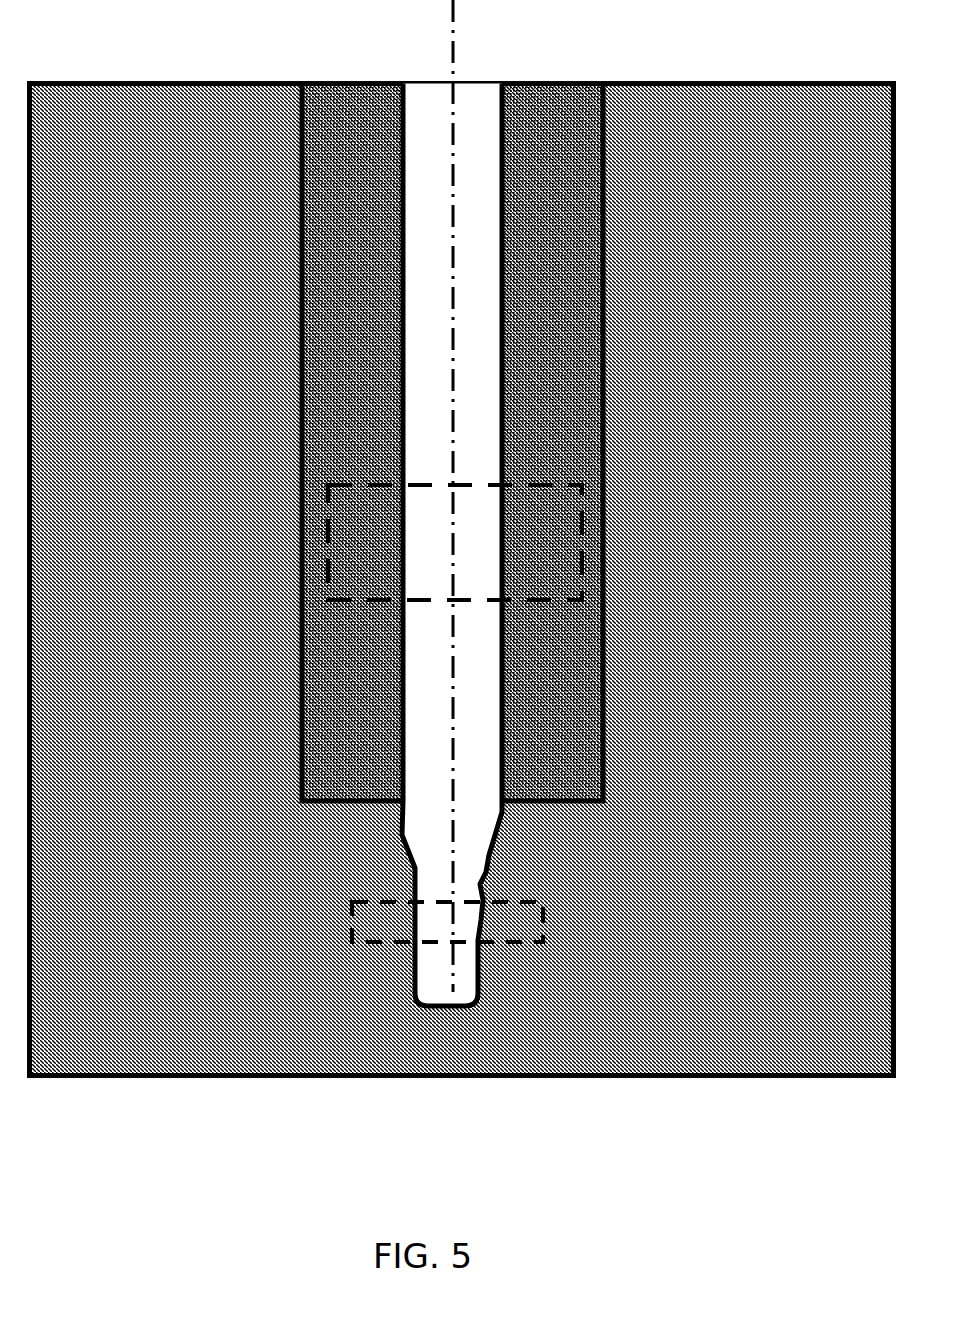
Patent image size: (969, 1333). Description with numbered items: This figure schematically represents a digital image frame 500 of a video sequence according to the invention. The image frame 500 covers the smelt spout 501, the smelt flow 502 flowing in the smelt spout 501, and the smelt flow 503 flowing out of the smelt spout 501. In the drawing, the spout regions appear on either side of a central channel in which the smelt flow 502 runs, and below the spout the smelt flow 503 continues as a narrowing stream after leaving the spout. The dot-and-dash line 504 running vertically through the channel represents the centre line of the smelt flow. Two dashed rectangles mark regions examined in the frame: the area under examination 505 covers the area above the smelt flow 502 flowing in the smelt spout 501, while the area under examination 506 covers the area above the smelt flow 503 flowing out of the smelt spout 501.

The digital image frame 500 is at (146, 1171).
The smelt spout 501 is at (320, 81).
The smelt flow flowing in the smelt spout 502 is at (472, 81).
The smelt flow flowing out of the smelt spout 503 is at (440, 985).
The dot-and-dash line 504 is at (453, 40).
The area under examination 505 is at (553, 600).
The area under examination 506 is at (522, 940).